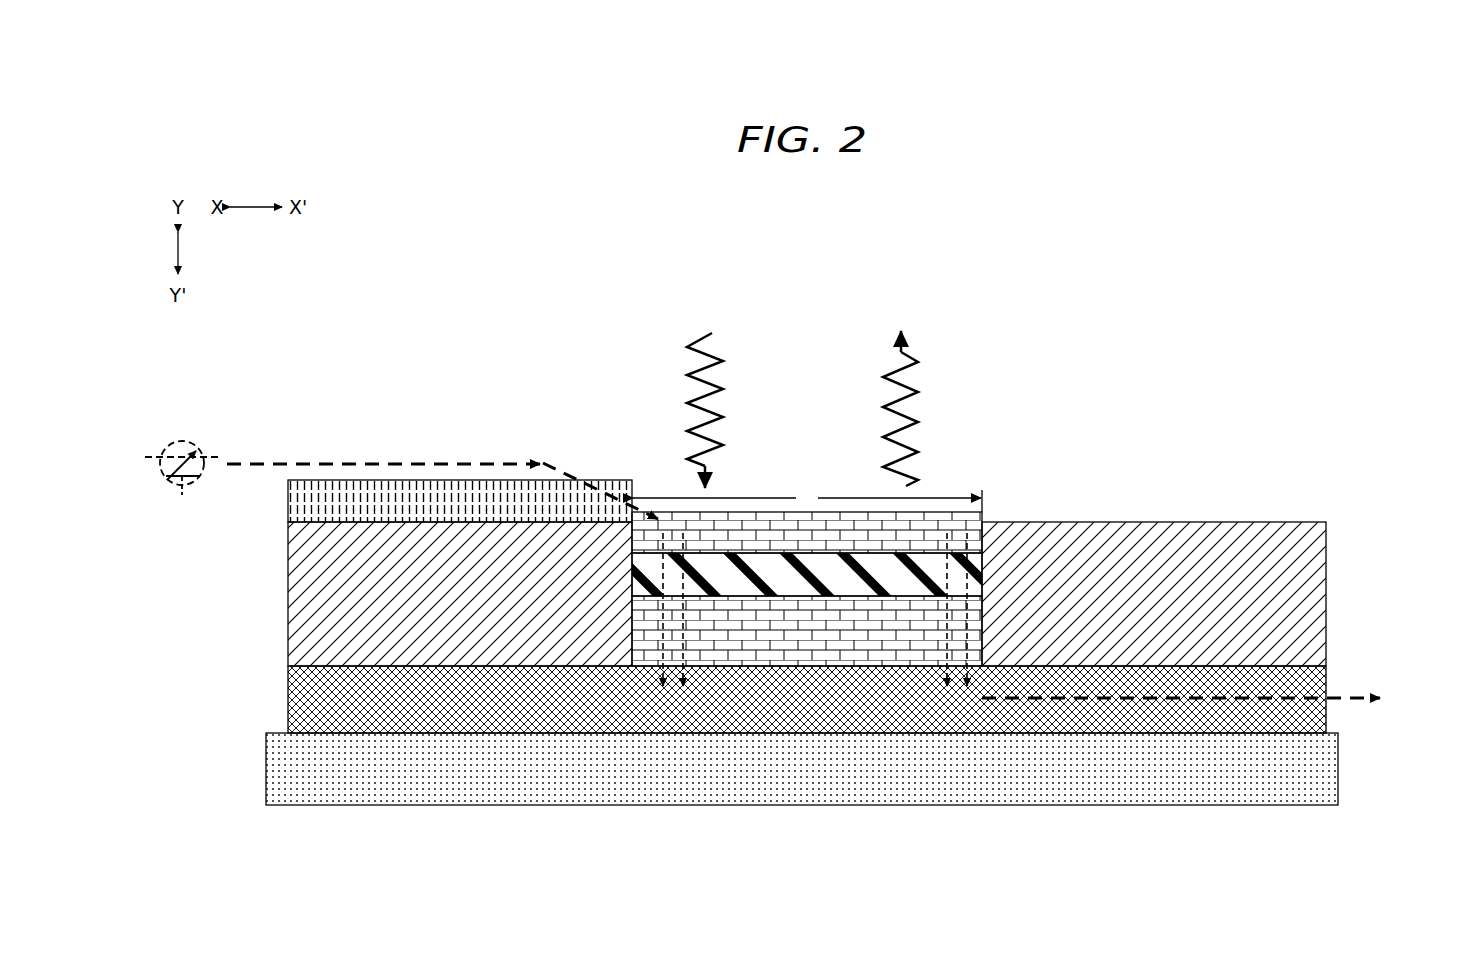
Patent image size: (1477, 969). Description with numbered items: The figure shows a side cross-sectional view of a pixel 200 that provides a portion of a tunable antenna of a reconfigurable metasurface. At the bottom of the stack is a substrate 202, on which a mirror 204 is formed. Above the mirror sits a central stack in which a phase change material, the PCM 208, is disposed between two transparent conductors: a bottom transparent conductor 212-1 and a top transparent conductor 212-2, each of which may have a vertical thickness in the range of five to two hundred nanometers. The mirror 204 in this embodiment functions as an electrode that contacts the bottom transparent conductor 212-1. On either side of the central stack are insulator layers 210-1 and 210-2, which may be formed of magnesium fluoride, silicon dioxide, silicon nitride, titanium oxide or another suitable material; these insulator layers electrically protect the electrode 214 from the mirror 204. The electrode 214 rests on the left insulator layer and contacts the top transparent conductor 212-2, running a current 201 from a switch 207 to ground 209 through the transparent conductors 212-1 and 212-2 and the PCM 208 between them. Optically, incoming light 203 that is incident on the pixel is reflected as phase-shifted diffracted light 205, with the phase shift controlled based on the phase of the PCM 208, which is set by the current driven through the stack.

The pixel 200 is at (789, 208).
The current 201 is at (401, 451).
The substrate 202 is at (266, 764).
The incoming light 203 is at (690, 315).
The mirror 204 is at (288, 698).
The phase-shifted diffracted light 205 is at (885, 315).
The switch 207 is at (152, 435).
The PCM 208 is at (789, 587).
The ground 209 is at (1401, 724).
The insulator layer 210-1 is at (288, 596).
The insulator layer 210-2 is at (1326, 595).
The bottom transparent conductor 212-1 is at (778, 645).
The top transparent conductor 212-2 is at (778, 545).
The electrode 214 is at (288, 503).